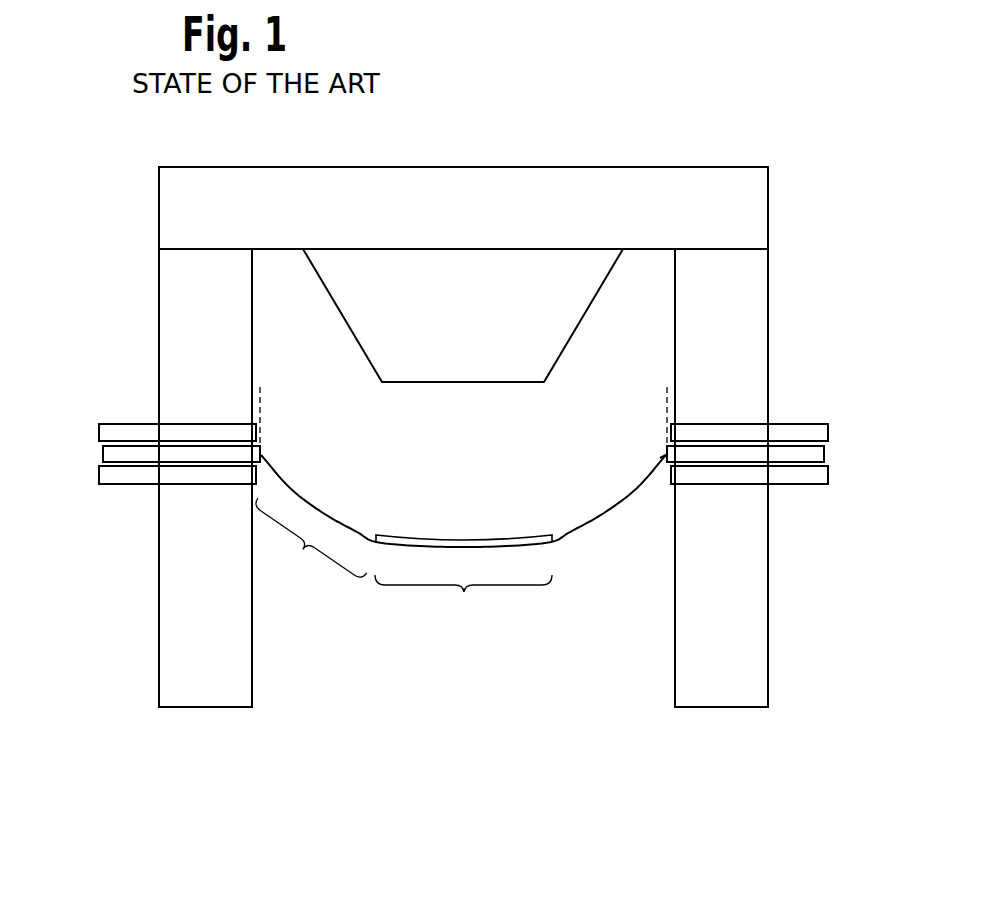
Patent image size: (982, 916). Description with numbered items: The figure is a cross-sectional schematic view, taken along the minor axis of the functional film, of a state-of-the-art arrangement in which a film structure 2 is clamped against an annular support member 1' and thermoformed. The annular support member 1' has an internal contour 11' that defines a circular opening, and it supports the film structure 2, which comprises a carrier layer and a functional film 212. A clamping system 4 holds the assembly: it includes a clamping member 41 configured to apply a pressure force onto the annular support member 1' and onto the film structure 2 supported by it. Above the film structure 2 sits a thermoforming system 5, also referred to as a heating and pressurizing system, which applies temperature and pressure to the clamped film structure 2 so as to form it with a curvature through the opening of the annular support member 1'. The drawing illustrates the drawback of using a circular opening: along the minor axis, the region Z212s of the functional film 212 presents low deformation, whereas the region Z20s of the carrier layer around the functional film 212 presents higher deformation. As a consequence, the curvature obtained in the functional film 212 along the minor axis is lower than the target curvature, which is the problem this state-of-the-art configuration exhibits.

The clamping system 4 is at (118, 258).
The thermoforming system 5 is at (473, 325).
The clamping member 41 is at (106, 414).
The annular support member 1' is at (784, 474).
The film structure 2 is at (302, 478).
The functional film 212 is at (523, 540).
The internal contour 11' is at (636, 510).
The region of the carrier layer Z20s is at (307, 542).
The region of the functional film Z212s is at (463, 600).